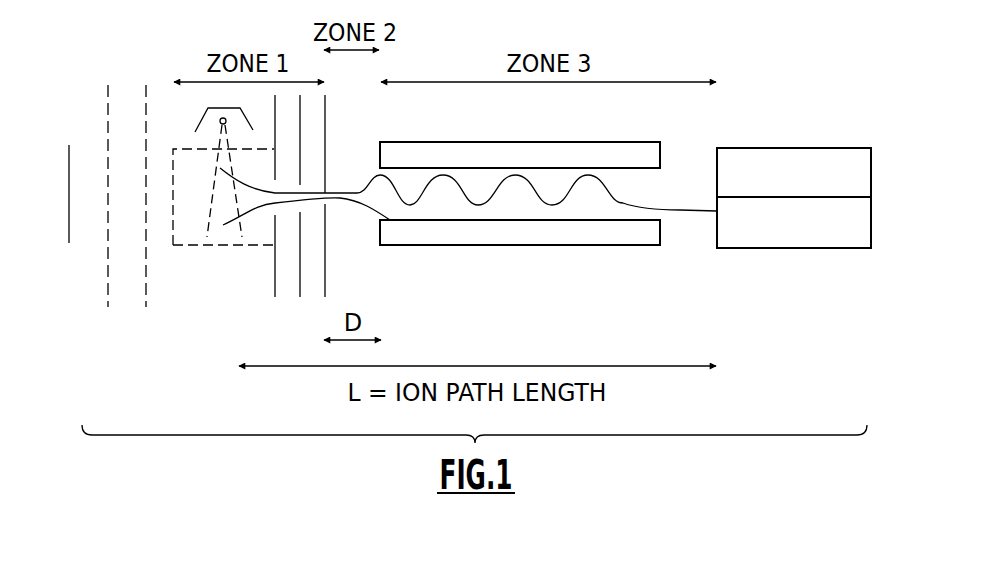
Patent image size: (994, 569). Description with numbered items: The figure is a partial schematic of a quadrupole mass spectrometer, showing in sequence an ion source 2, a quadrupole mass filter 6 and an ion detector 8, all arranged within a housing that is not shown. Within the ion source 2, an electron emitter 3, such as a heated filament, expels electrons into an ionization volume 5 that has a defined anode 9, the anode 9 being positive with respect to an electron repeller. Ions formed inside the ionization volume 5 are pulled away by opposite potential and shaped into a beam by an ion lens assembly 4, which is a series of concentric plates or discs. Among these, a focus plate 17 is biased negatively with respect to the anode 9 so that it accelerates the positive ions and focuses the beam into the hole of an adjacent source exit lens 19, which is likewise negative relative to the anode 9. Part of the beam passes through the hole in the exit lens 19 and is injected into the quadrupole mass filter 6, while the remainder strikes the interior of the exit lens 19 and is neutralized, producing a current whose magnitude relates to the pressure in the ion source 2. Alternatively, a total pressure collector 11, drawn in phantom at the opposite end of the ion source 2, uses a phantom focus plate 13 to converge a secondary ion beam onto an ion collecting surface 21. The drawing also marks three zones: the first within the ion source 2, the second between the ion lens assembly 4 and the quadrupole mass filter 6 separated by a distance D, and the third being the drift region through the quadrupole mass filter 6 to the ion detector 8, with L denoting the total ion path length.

The ion source 2 is at (203, 233).
The electron emitter 3 is at (220, 120).
The ion lens assembly 4 is at (277, 297).
The ionization volume 5 is at (241, 168).
The quadrupole mass filter 6 is at (498, 142).
The ion detector 8 is at (840, 148).
The anode 9 is at (230, 246).
The total pressure collector 11 is at (108, 115).
The focus plate 13 is at (146, 93).
The focus plate 17 is at (290, 263).
The source exit lens 19 is at (327, 287).
The ion collecting surface 21 is at (69, 233).